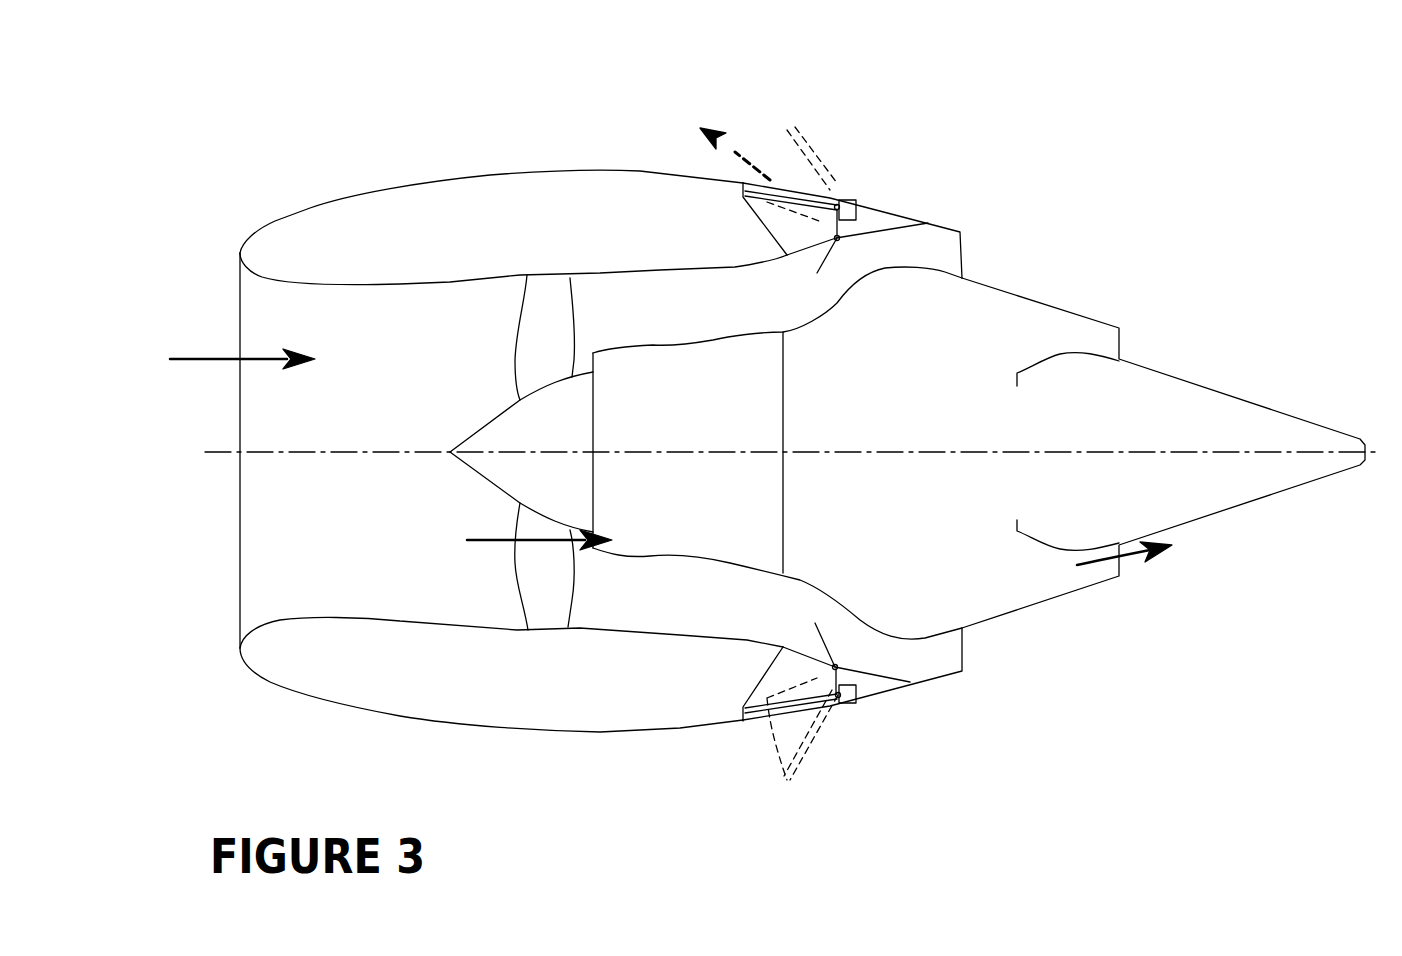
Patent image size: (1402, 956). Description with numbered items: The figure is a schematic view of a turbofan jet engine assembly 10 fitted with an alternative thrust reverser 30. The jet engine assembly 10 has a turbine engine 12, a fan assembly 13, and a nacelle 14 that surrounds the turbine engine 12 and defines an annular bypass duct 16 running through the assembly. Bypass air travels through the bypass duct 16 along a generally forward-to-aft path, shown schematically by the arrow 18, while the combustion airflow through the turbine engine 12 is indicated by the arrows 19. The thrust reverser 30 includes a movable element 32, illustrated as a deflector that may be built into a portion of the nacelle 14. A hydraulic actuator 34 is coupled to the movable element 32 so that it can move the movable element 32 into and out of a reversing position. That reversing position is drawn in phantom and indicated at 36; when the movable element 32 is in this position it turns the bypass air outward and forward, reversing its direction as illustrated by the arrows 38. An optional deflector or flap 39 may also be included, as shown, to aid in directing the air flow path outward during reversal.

The turbofan jet engine assembly 10 is at (268, 193).
The turbine engine 12 is at (677, 380).
The fan assembly 13 is at (542, 295).
The nacelle 14 is at (364, 193).
The annular bypass duct 16 is at (612, 301).
The bypass air flow arrow 18 is at (222, 357).
The combustion airflow arrows 19 is at (540, 545).
The thrust reverser 30 is at (833, 187).
The movable element 32 is at (795, 195).
The hydraulic actuator 34 is at (867, 207).
The reversing position 36 is at (772, 185).
The reversed air flow arrows 38 is at (787, 290).
The deflector or flap 39 is at (928, 223).